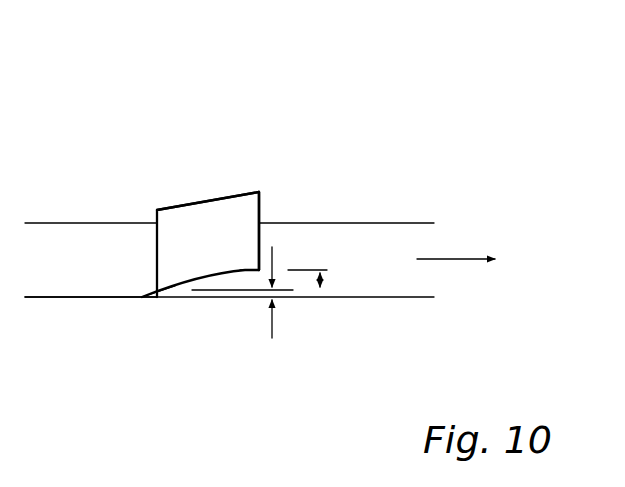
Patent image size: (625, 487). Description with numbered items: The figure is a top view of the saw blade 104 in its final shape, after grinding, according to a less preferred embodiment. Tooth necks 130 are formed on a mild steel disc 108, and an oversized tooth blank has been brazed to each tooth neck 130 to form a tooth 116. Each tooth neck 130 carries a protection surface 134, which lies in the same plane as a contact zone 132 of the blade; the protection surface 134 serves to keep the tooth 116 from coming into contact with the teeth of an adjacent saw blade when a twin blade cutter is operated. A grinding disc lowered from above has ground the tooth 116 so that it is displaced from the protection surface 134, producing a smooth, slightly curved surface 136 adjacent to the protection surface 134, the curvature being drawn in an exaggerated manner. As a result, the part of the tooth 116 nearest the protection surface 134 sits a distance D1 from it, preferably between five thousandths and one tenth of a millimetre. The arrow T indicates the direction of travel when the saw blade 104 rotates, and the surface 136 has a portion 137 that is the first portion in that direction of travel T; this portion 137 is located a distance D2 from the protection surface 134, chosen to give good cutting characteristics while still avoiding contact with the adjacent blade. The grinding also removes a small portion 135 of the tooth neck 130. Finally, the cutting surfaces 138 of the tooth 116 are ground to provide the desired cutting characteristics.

The saw blade 104 is at (315, 106).
The mild steel disc 108 is at (358, 237).
The tooth 116 is at (194, 200).
The tooth neck 130 is at (89, 219).
The contact zone 132 is at (368, 298).
The protection surface 134 is at (109, 299).
The small portion of the tooth neck 135 is at (156, 300).
The smooth, slightly curved surface 136 is at (210, 277).
The portion of the surface 137 is at (248, 273).
The cutting surfaces 138 is at (243, 210).
The distance D1 is at (251, 293).
The distance D2 is at (326, 282).
The direction of travel T is at (456, 245).